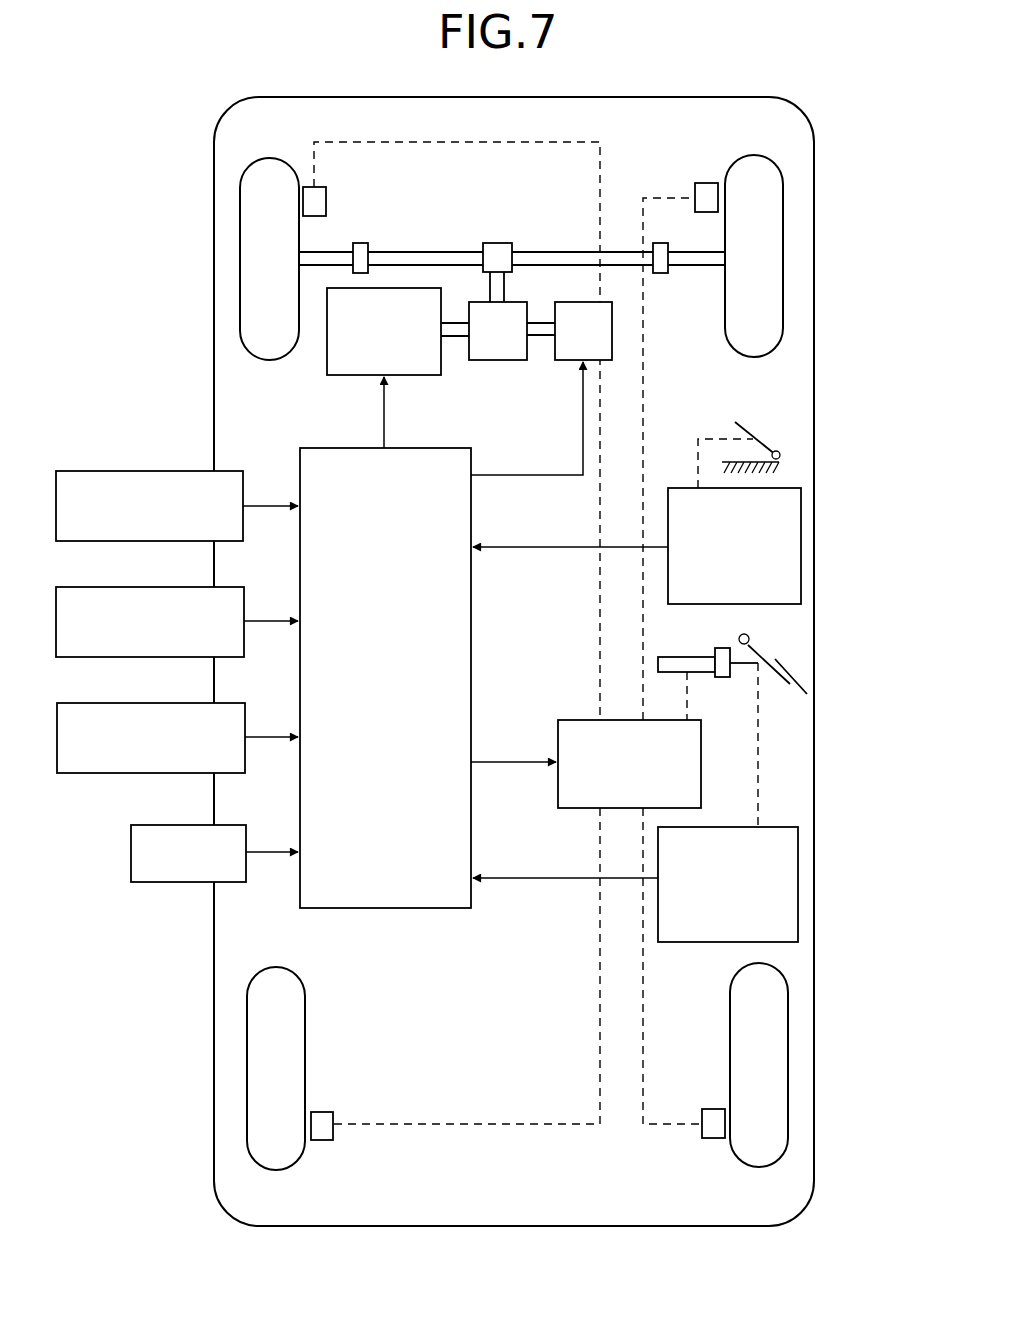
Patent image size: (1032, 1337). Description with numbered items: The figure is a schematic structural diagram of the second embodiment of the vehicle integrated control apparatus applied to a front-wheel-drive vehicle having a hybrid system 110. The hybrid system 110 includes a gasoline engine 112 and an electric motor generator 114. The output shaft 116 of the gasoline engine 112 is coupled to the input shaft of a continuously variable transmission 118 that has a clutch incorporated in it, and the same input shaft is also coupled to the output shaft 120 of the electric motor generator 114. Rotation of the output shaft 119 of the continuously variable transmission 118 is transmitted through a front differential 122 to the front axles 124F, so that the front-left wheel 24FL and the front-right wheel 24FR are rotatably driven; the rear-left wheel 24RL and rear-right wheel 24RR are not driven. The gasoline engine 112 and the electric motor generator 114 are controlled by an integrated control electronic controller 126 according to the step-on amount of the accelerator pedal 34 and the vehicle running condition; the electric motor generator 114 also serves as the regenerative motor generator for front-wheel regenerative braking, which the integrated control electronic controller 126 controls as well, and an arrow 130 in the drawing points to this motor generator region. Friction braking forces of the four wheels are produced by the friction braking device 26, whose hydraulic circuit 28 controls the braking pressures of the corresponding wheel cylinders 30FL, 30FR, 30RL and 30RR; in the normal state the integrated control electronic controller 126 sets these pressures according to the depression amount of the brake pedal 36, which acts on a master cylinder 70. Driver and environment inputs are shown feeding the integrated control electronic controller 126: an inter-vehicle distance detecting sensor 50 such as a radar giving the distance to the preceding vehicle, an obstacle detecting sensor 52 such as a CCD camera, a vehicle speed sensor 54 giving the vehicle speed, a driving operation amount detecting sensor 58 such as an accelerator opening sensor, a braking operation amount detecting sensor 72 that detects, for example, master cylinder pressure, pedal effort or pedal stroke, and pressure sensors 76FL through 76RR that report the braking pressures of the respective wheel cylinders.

The front-left wheel 24FL is at (240, 229).
The front-right wheel 24FR is at (783, 270).
The rear-left wheel 24RL is at (247, 1078).
The rear-right wheel 24RR is at (788, 1075).
The friction braking device 26 is at (585, 672).
The hydraulic circuit 28 is at (629, 764).
The wheel cylinder 30FL is at (326, 200).
The wheel cylinder 30FR is at (708, 183).
The wheel cylinder 30RL is at (322, 1141).
The wheel cylinder 30RR is at (716, 1139).
The accelerator pedal 34 is at (748, 430).
The brake pedal 36 is at (793, 676).
The inter-vehicle distance detecting sensor 50 is at (160, 471).
The obstacle detecting sensor 52 is at (157, 587).
The vehicle speed sensor 54 is at (167, 703).
The driving operation amount detecting sensor 58 is at (801, 556).
The master cylinder 70 is at (688, 657).
The braking operation amount detecting sensor 72 is at (798, 880).
The pressure sensor 76FL is at (165, 882).
The pressure sensor 76RR is at (214, 904).
The hybrid system 110 is at (493, 297).
The gasoline engine 112 is at (384, 331).
The electric motor generator 114 is at (618, 340).
The output shaft 116 is at (455, 342).
The continuously variable transmission 118 is at (498, 331).
The output shaft 119 is at (507, 287).
The output shaft 120 is at (541, 342).
The front differential 122 is at (497, 243).
The front axle 124F is at (660, 288).
The integrated control electronic controller 126 is at (484, 635).
The regenerative braking device 130 is at (633, 331).